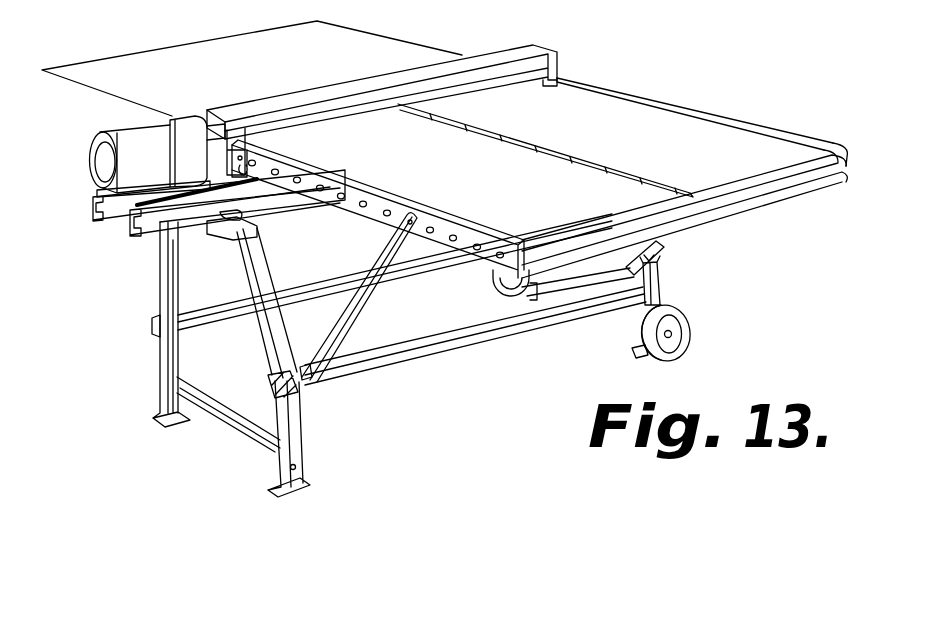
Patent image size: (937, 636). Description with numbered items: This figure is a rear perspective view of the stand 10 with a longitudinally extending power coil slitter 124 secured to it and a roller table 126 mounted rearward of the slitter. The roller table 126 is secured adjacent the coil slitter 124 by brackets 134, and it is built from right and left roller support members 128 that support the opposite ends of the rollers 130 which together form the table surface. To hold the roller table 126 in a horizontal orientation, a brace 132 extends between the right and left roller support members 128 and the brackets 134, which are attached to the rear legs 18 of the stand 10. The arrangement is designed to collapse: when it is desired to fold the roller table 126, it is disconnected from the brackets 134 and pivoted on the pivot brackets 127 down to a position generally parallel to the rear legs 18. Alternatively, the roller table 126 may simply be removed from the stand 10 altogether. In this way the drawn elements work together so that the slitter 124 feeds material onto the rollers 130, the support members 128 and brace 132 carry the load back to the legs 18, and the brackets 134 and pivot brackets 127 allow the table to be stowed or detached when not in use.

The stand 10 is at (233, 426).
The rear legs 18 is at (657, 291).
The power coil slitter 124 is at (541, 46).
The roller table 126 is at (733, 118).
The pivot brackets 127 is at (254, 149).
The roller support members 128 is at (820, 140).
The rollers 130 is at (808, 182).
The brace 132 is at (363, 307).
The brackets 134 is at (300, 363).